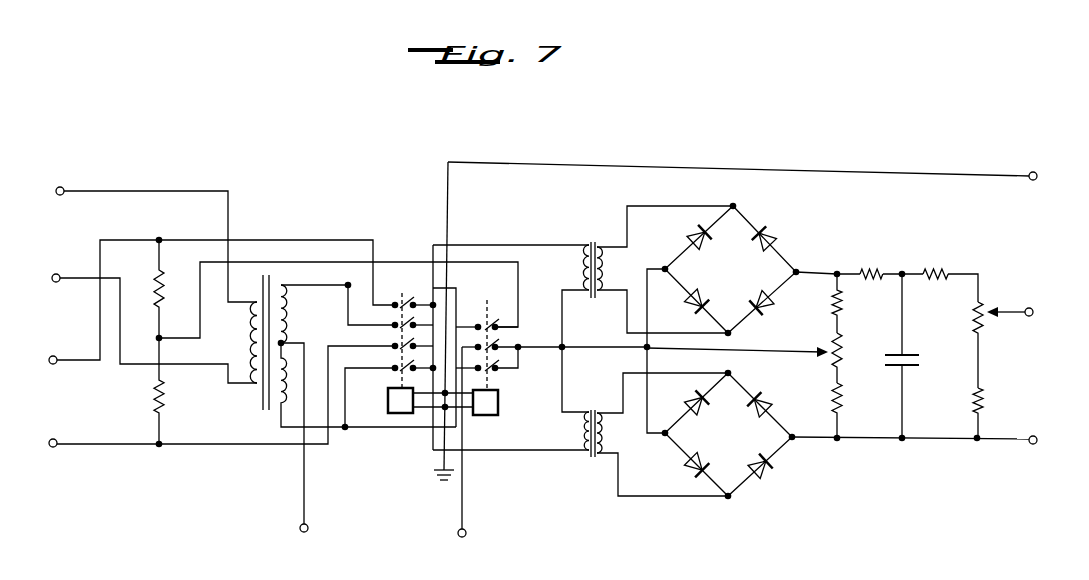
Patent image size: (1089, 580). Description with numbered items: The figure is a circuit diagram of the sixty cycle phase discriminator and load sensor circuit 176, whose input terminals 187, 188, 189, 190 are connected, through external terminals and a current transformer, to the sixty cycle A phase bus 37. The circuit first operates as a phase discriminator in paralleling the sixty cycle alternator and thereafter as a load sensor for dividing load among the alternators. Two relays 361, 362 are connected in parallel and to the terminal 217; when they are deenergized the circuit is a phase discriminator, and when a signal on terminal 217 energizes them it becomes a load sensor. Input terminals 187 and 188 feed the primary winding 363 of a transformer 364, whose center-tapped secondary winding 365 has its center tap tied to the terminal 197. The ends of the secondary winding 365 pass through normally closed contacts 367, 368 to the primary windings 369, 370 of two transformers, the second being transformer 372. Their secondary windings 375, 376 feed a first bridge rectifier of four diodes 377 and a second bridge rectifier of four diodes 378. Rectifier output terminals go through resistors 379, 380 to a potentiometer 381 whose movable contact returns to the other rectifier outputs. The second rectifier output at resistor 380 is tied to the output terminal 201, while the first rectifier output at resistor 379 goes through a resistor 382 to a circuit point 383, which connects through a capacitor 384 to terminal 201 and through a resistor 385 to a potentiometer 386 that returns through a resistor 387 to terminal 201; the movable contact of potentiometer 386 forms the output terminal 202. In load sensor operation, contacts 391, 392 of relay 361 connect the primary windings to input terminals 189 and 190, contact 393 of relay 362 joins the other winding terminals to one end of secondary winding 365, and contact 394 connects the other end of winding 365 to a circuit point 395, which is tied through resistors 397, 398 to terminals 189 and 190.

The 60 cycle phase discriminator and load sensor circuit 176 is at (852, 155).
The terminal 217 is at (1038, 177).
The input terminal 187 is at (62, 188).
The input terminal 188 is at (61, 266).
The input terminal 189 is at (53, 364).
The input terminal 190 is at (50, 446).
The input terminal 197 is at (299, 531).
The resistor 397 is at (163, 270).
The resistor 398 is at (153, 403).
The circuit point 395 is at (157, 341).
The primary winding 363 is at (252, 356).
The transformer 364 is at (273, 277).
The center-tapped secondary winding 365 is at (291, 303).
The normally closed contact 367 is at (390, 330).
The contact of relay 361 391 is at (413, 302).
The contact of relay 361 392 is at (410, 343).
The normally closed contact 368 is at (400, 374).
The relay 361 is at (402, 413).
The contact of relay 362 394 is at (491, 324).
The contact of relay 362 393 is at (490, 374).
The relay 362 is at (491, 415).
The 60 cycle bus 37 is at (596, 242).
The secondary winding 375 is at (612, 266).
The primary winding 369 is at (585, 272).
The primary winding 370 is at (584, 411).
The transformer 372 is at (586, 459).
The secondary winding 376 is at (607, 438).
The diodes 377 is at (723, 318).
The diodes 378 is at (729, 435).
The resistor 382 is at (870, 273).
The circuit point 383 is at (904, 274).
The resistor 385 is at (950, 270).
The resistor 379 is at (845, 302).
The potentiometer 381 is at (843, 363).
The resistor 380 is at (843, 413).
The capacitor 384 is at (909, 368).
The potentiometer 386 is at (984, 311).
The resistor 387 is at (984, 394).
The output terminal 202 is at (1032, 311).
The output terminal 201 is at (1044, 432).